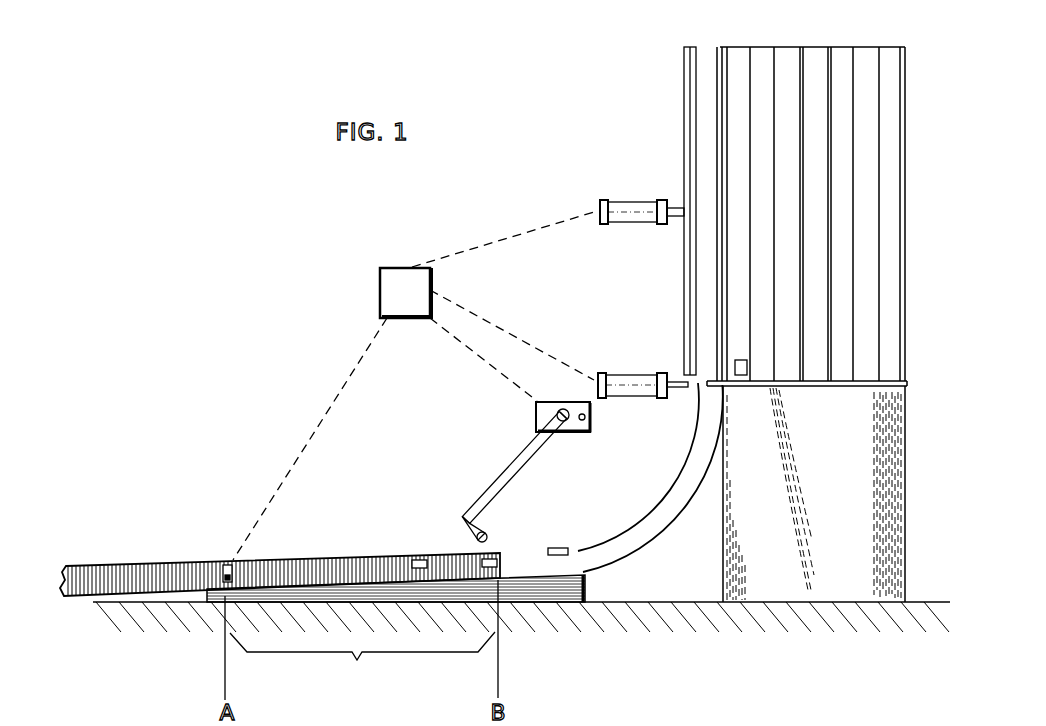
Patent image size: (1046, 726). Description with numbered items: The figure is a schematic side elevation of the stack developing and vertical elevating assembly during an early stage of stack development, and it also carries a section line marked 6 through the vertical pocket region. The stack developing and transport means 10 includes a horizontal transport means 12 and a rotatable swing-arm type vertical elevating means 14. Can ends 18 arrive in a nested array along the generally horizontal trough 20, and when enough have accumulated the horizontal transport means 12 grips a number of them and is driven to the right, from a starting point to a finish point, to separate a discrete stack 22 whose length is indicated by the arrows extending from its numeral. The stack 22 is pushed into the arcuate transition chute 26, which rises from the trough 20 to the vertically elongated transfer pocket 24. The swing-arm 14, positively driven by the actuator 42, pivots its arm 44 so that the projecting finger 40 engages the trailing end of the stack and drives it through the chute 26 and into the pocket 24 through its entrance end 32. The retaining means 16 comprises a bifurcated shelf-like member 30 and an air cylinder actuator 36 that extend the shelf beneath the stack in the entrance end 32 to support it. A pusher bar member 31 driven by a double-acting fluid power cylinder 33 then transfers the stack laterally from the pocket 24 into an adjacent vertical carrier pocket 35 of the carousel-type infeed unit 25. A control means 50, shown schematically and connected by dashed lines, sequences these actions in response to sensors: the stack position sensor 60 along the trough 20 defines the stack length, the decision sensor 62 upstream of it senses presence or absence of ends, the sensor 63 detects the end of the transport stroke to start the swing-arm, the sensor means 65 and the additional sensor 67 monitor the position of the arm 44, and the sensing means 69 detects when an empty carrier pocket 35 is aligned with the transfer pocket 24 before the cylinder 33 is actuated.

The stack developing and transport means 10 is at (340, 327).
The horizontal transport means 12 is at (231, 577).
The vertical elevating means 14 is at (488, 444).
The retaining means 16 is at (604, 352).
The can ends 18 is at (108, 565).
The trough 20 is at (562, 593).
The stack 22 is at (362, 666).
The vertical transfer pocket 24 is at (706, 240).
The infeed unit 25 is at (810, 512).
The arcuate transition chute 26 is at (695, 485).
The shelf-like member 30 is at (680, 392).
The pusher bar member 31 is at (682, 62).
The entrance end 32 is at (710, 383).
The fluid power cylinder 33 is at (625, 202).
The vertical carrier pocket 35 is at (740, 62).
The actuator means member 36 is at (640, 375).
The projecting finger 40 is at (479, 523).
The swing-arm drive means 42 is at (564, 445).
The arm 44 is at (509, 477).
The control means 50 is at (398, 304).
The stack position sensor 60 is at (498, 563).
The decision sensor 62 is at (418, 560).
The sensor 63 is at (556, 548).
The sensor means 65 is at (551, 440).
The sensor 67 is at (585, 417).
The sensing means 69 is at (779, 386).
The section line 6- 6 is at (655, 297).